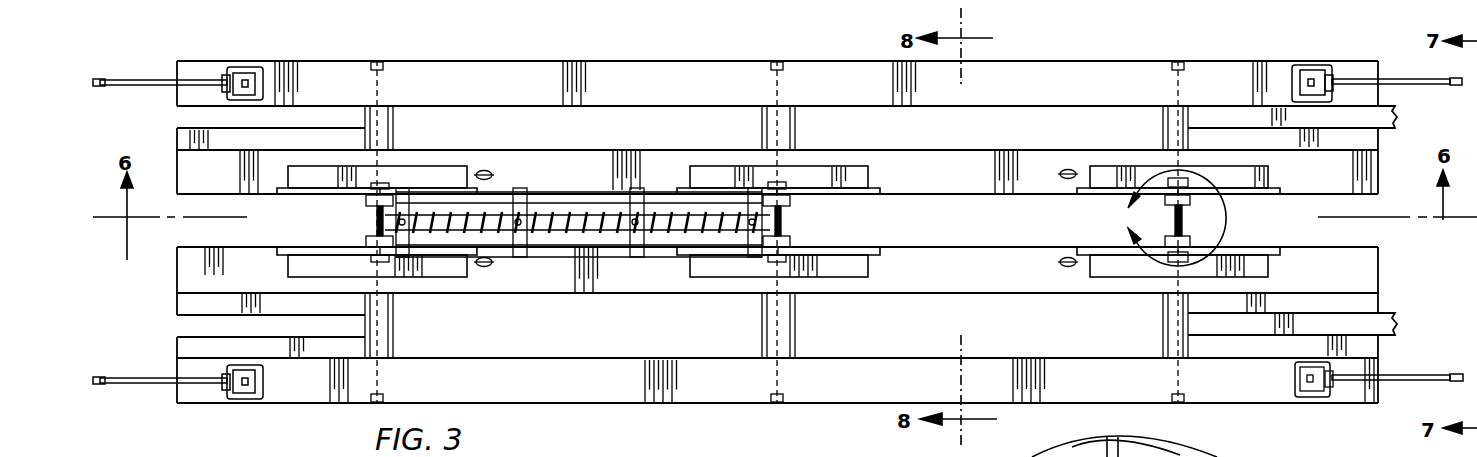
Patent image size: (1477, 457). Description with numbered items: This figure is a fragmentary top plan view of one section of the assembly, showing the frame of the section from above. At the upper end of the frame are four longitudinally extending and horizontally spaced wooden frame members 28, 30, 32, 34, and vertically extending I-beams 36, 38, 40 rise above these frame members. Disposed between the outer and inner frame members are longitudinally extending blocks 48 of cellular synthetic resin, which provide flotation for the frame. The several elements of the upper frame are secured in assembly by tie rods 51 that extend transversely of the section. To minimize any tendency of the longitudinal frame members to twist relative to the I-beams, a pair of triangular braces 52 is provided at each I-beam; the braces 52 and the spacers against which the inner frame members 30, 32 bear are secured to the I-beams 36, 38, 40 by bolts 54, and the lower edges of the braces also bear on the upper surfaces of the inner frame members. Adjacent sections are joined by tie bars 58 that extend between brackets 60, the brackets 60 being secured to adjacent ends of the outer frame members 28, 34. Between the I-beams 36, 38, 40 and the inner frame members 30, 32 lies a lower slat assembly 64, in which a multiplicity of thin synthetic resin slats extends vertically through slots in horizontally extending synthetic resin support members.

The wooden frame member 28 is at (1095, 78).
The wooden frame member 30 is at (1050, 148).
The wooden frame member 32 is at (590, 280).
The wooden frame member 34 is at (610, 385).
The I-beam 36 is at (1185, 215).
The I-beam 38 is at (790, 218).
The I-beam 40 is at (370, 215).
The block of cellular synthetic resin 48 is at (640, 133).
The tie rod 51 is at (1182, 97).
The triangular brace 52 is at (727, 187).
The bolt 54 is at (780, 183).
The tie bar 58 is at (1417, 377).
The bracket 60 is at (1327, 397).
The lower slat assembly 64 is at (558, 207).